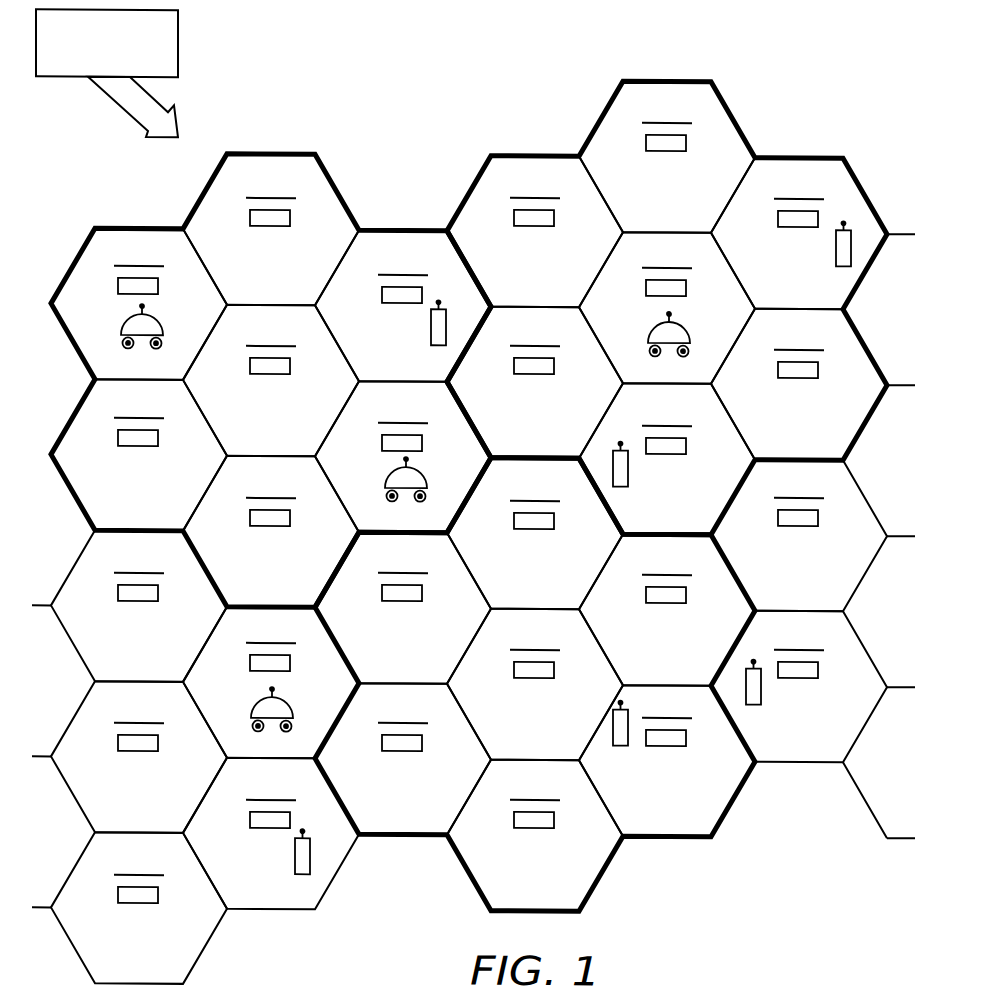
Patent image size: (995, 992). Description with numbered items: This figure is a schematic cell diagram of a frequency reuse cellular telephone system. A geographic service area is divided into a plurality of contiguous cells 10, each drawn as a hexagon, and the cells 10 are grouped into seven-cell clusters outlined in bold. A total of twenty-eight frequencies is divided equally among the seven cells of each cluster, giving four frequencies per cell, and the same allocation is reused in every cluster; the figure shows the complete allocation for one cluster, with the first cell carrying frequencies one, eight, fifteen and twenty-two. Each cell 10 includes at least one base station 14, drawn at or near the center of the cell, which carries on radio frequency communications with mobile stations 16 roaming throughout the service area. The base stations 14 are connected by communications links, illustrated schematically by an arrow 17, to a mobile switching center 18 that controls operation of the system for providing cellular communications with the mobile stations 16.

The cell 10 is at (80, 283).
The base station 14 is at (158, 286).
The mobile station 16 is at (138, 341).
The arrow 17 is at (126, 112).
The mobile switching center 18 is at (178, 32).